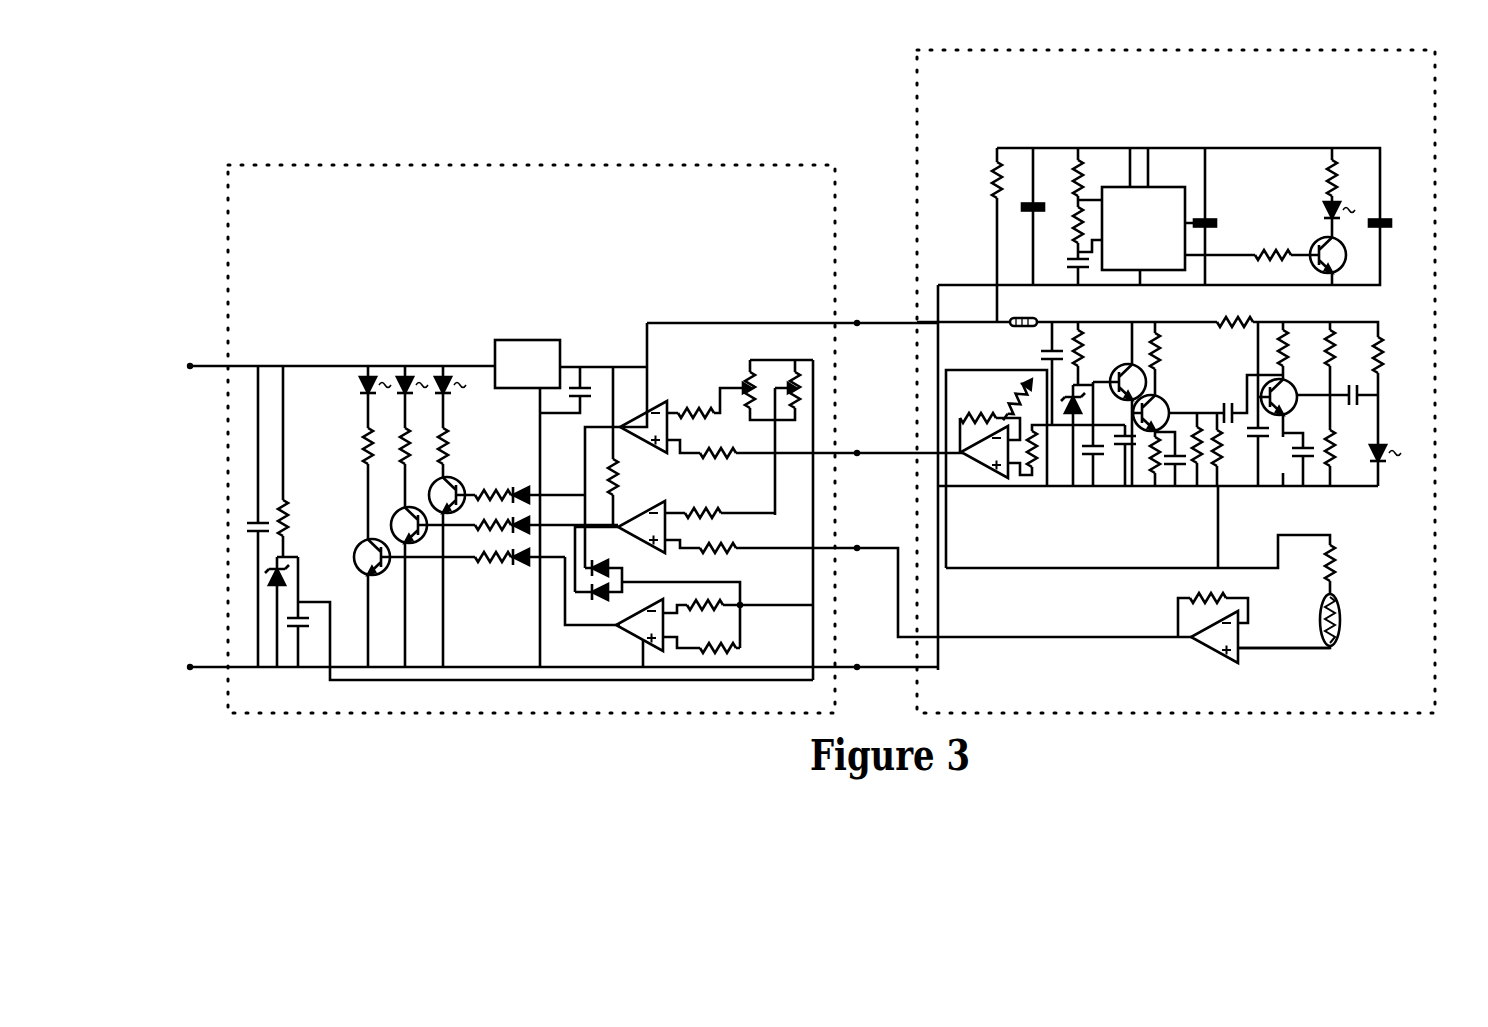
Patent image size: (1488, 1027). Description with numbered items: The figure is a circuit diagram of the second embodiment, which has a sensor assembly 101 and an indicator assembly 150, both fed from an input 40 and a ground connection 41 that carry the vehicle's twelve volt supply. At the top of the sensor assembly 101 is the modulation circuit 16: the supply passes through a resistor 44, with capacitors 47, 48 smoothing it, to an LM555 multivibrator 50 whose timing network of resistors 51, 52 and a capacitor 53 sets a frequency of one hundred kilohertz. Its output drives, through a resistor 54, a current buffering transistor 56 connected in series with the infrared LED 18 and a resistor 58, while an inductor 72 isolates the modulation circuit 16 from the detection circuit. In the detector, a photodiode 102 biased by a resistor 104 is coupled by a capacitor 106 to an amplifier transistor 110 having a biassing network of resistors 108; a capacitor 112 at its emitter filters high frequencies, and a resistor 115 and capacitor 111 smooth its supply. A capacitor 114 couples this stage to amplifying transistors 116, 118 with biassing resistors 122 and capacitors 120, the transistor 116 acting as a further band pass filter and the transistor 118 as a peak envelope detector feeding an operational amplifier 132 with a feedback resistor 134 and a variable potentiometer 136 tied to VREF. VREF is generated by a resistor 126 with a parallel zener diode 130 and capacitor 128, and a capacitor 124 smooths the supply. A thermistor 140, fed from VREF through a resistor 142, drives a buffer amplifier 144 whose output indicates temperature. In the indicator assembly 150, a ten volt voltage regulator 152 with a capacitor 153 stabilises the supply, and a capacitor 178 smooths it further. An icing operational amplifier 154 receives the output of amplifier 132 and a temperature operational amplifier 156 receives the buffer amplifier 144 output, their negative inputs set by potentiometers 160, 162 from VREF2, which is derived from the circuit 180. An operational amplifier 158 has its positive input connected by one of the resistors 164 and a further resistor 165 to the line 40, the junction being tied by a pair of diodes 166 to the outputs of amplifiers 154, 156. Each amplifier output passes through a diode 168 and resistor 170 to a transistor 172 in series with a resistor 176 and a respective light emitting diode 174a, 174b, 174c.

The modulation circuit 16 is at (1386, 154).
The LED 18 is at (1352, 200).
The input 40 is at (188, 369).
The ground connection 41 is at (188, 672).
The resistor 44 is at (986, 178).
The capacitor 47 is at (1215, 210).
The capacitor 48 is at (1392, 218).
The multivibrator 50 is at (1160, 186).
The resistor 51 is at (1086, 178).
The resistor 52 is at (1072, 224).
The capacitor 53 is at (1090, 275).
The resistor 54 is at (1268, 247).
The current buffering transistor 56 is at (1038, 200).
The resistor 58 is at (1340, 172).
The inductor 72 is at (1024, 318).
The sensor assembly 101 is at (1200, 48).
The photodiode 102 is at (1392, 458).
The resistor 104 is at (1384, 342).
The capacitor 106 is at (1362, 398).
The resistors 108 is at (1292, 350).
The amplifier transistor 110 is at (1278, 396).
The capacitor 111 is at (1255, 442).
The capacitor 112 is at (1306, 462).
The capacitor 114 is at (1225, 408).
The resistor 115 is at (1240, 322).
The amplifying transistor 116 is at (1172, 396).
The amplifying transistor 118 is at (1136, 362).
The capacitors 120 is at (1122, 444).
The biassing resistors 122 is at (1162, 360).
The capacitor 124 is at (1060, 348).
The resistor 126 is at (1085, 366).
The capacitor 128 is at (1090, 462).
The zener diode 130 is at (1068, 425).
The operational amplifier 132 is at (985, 472).
The resistor 134 is at (975, 415).
The variable potentiometer 136 is at (1006, 380).
The thermistor 140 is at (1346, 630).
The resistor 142 is at (1345, 562).
The buffer amplifier 144 is at (1215, 638).
The indicator assembly 150 is at (550, 163).
The voltage regulator 152 is at (512, 342).
The capacitor 153 is at (586, 382).
The icing operational amplifier 154 is at (649, 434).
The temperature operational amplifier 156 is at (636, 540).
The operational amplifier 158 is at (633, 647).
The potentiometer 160 is at (768, 375).
The potentiometer 162 is at (815, 396).
The resistors 164 is at (704, 460).
The resistor 165 is at (585, 473).
The diodes 166 is at (603, 607).
The diode 168 is at (520, 482).
The resistor 170 is at (496, 485).
The transistor 172 is at (353, 548).
The light emitting diode 174a is at (433, 365).
The light emitting diode 174b is at (396, 365).
The light emitting diode 174c is at (355, 387).
The resistor 176 is at (362, 450).
The capacitor 178 is at (250, 534).
The circuit 180 is at (295, 628).